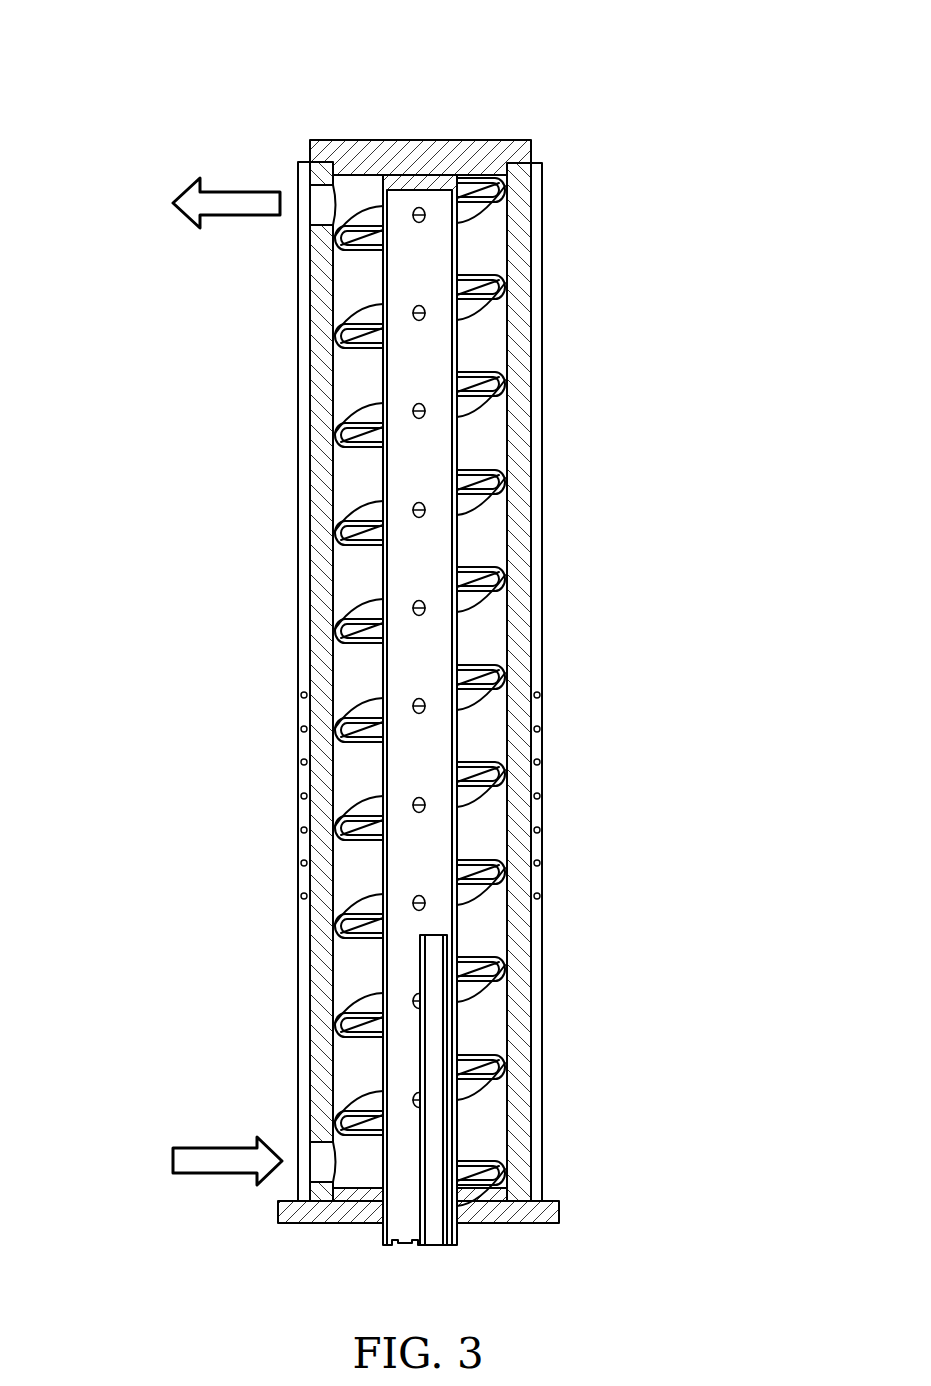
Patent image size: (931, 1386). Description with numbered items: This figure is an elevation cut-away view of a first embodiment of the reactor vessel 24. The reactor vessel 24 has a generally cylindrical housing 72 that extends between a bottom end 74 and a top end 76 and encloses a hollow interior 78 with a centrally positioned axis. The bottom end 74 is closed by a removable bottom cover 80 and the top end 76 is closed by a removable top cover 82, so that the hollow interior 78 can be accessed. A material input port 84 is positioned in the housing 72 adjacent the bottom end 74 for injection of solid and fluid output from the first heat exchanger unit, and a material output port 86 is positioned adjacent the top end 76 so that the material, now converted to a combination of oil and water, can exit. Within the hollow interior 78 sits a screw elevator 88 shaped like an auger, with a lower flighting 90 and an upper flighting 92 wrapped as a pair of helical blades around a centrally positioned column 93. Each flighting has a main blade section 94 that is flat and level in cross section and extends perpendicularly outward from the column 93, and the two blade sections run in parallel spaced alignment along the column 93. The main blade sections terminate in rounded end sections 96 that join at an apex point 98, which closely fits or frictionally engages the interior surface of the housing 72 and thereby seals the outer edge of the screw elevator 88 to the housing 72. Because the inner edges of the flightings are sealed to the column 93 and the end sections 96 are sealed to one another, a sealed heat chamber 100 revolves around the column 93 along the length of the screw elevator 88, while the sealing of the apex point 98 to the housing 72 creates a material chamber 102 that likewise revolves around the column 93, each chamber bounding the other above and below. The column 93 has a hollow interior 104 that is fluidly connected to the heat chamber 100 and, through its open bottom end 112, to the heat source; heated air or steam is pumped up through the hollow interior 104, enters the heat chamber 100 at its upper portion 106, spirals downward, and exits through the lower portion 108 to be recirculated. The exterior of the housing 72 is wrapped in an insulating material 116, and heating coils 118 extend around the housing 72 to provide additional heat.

The reactor vessel 24 is at (103, 217).
The housing 72 is at (318, 572).
The bottom end 74 is at (535, 1197).
The top end 76 is at (535, 161).
The hollow interior 78 is at (449, 110).
The bottom cover 80 is at (562, 1212).
The top cover 82 is at (497, 150).
The material input port 84 is at (318, 1150).
The material output port 86 is at (318, 212).
The screw elevator 88 is at (492, 560).
The lower flighting 90 is at (486, 410).
The upper flighting 92 is at (480, 370).
The column 93 is at (476, 362).
The main blade section 94 is at (497, 353).
The end section 96 is at (503, 378).
The apex point 98 is at (503, 386).
The heat chamber 100 is at (473, 512).
The material chamber 102 is at (480, 238).
The hollow interior 104 is at (400, 205).
The upper portion 106 is at (495, 183).
The lower portion 108 is at (470, 1178).
The open bottom end 112 is at (409, 1252).
The insulating material 116 is at (303, 812).
The heating coils 118 is at (300, 896).